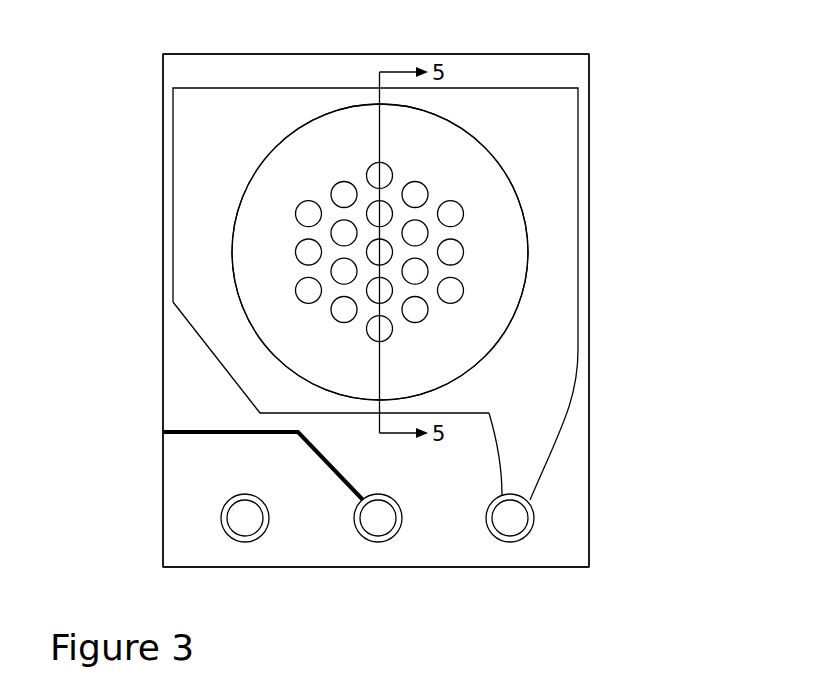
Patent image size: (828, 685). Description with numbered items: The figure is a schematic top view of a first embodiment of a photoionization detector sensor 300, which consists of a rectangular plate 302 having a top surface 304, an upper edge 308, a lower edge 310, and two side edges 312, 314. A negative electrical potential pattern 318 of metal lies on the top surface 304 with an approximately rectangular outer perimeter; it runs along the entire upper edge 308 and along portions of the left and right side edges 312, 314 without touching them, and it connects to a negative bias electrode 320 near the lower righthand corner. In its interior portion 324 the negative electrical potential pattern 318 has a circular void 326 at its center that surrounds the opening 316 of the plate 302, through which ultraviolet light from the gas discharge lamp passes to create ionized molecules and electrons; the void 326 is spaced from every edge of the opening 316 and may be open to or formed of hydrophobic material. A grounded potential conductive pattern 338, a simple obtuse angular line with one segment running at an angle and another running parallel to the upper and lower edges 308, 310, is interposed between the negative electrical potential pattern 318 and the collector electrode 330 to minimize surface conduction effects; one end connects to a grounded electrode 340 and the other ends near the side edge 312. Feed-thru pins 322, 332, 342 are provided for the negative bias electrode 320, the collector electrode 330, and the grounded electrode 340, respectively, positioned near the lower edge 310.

The PID sensor 300 is at (160, 37).
The plate 302 is at (574, 46).
The top surface 304 is at (412, 548).
The upper edge 308 is at (230, 54).
The lower edge 310 is at (547, 568).
The left side edge 312 is at (163, 345).
The right side edge 314 is at (590, 292).
The opening 316 is at (258, 218).
The negative electrical potential pattern 318 is at (576, 429).
The negative bias electrode 320 is at (537, 518).
The feed-thru pin 322 is at (510, 528).
The interior portion 324 is at (468, 130).
The circular void 326 is at (492, 187).
The collector electrode 330 is at (221, 512).
The feed-thru pin 332 is at (238, 528).
The grounded potential conductive pattern 338 is at (190, 433).
The grounded electrode 340 is at (355, 526).
The feed-thru pin 342 is at (378, 528).